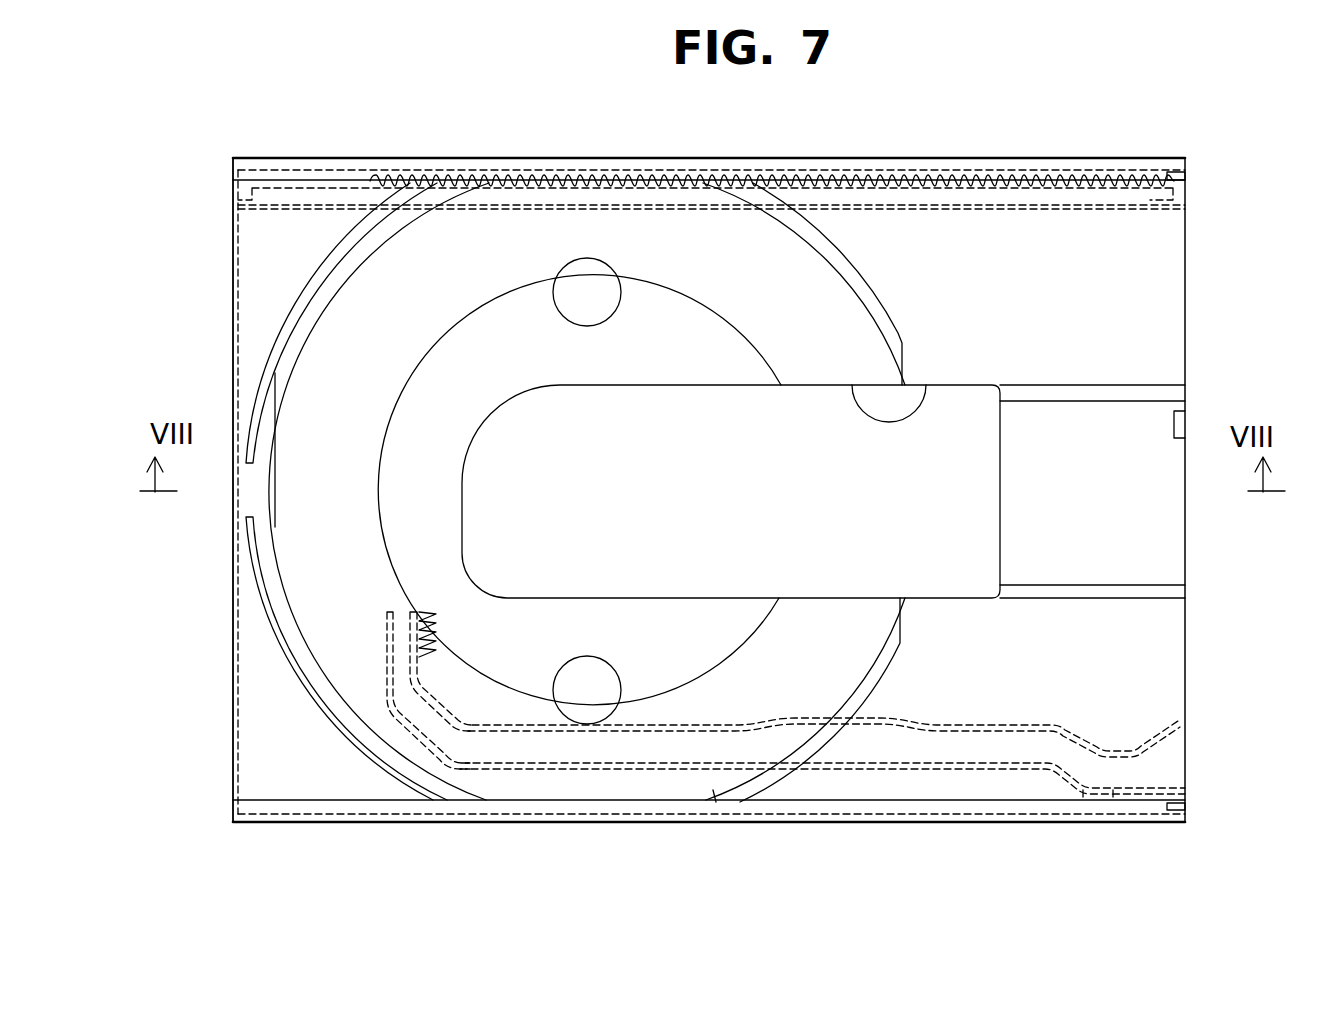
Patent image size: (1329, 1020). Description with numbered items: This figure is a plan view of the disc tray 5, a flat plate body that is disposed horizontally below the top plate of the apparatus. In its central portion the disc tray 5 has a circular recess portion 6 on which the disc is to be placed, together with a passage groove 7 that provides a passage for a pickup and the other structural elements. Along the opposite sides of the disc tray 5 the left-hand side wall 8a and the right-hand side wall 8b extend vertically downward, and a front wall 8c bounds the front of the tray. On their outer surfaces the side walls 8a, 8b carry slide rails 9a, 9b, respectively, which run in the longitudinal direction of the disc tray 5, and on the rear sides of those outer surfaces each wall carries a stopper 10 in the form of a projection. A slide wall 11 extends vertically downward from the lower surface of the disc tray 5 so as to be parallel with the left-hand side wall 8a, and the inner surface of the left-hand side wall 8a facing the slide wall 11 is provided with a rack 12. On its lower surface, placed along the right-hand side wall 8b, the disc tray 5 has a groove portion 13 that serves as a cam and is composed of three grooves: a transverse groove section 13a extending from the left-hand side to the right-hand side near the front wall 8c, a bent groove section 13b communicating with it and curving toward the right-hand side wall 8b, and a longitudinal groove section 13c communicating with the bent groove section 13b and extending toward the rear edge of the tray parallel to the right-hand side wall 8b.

The disc tray 5 is at (233, 251).
The circular recess portion 6 is at (326, 578).
The passage groove 7 is at (927, 400).
The left-hand side wall 8a is at (305, 180).
The right-hand side wall 8b is at (308, 822).
The front wall 8c is at (234, 332).
The slide rail 9a is at (485, 158).
The slide rail 9b is at (510, 822).
The stopper 10 is at (1185, 175).
The slide wall 11 is at (1102, 208).
The rack 12 is at (653, 192).
The groove portion 13 is at (903, 748).
The transverse groove section 13a is at (402, 658).
The bent groove section 13b is at (424, 722).
The longitudinal groove section 13c is at (701, 750).